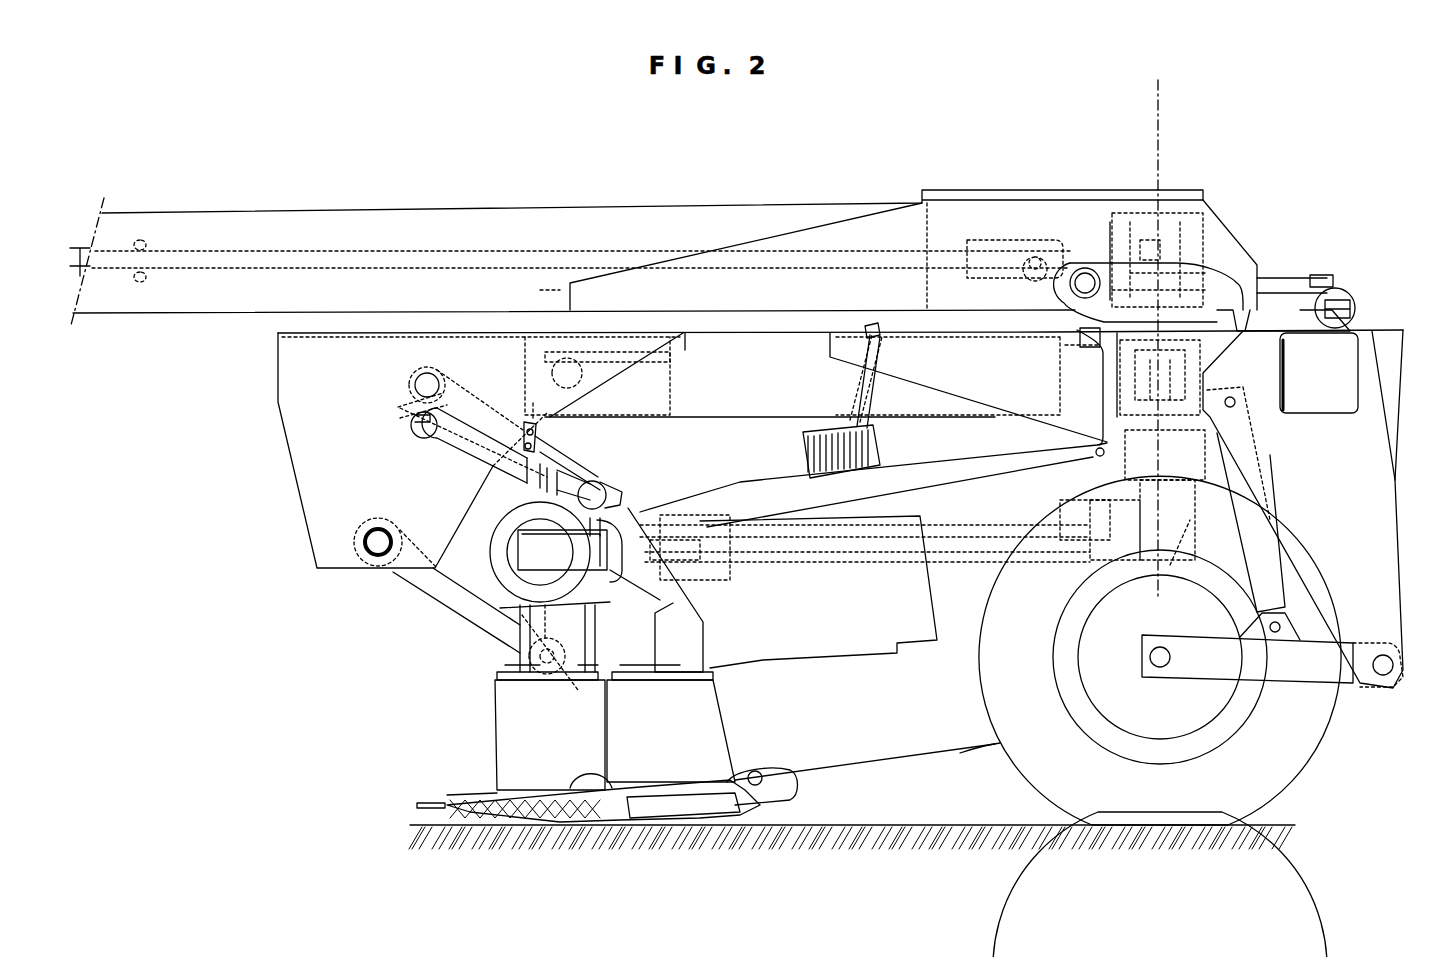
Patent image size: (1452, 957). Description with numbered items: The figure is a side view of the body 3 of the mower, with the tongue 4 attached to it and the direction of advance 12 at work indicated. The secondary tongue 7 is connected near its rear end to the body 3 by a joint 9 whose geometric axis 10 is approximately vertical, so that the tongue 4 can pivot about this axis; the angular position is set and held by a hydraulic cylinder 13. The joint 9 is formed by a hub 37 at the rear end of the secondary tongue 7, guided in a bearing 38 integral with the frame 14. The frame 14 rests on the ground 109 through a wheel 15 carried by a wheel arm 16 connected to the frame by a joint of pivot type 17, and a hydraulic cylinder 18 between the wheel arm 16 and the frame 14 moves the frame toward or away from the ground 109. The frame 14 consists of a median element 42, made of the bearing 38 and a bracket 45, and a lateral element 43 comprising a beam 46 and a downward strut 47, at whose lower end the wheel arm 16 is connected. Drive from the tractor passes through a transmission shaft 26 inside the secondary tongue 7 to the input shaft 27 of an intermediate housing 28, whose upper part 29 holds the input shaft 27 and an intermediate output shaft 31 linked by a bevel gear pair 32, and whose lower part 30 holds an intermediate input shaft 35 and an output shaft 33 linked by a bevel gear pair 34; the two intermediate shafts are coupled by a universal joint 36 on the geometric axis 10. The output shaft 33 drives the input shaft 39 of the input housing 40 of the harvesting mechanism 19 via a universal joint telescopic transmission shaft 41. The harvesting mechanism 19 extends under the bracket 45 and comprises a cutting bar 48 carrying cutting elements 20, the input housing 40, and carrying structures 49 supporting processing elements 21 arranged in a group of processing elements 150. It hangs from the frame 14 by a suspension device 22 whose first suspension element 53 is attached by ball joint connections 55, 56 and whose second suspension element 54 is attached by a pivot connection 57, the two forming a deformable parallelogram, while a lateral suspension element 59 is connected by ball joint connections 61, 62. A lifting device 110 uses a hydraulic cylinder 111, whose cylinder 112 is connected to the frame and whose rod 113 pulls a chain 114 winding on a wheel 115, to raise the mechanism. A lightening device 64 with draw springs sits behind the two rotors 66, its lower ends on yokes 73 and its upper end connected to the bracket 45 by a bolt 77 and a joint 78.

The body 3 is at (306, 650).
The tongue 4 is at (340, 207).
The secondary tongue 7 is at (514, 205).
The joint 9 is at (1224, 214).
The geometric axis 10 is at (1160, 127).
The direction of advance 12 is at (248, 103).
The hydraulic cylinder 13 is at (1341, 307).
The frame 14 is at (1388, 336).
The wheel 15 is at (1308, 754).
The wheel arm 16 is at (1283, 672).
The joint of pivot type 17 is at (1388, 670).
The hydraulic cylinder 18 is at (1258, 552).
The harvesting mechanism 19 is at (480, 688).
The cutting elements 20 is at (430, 807).
The processing elements 21 is at (879, 758).
The suspension device 22 is at (406, 580).
The transmission shaft 26 is at (582, 250).
The input shaft 27 is at (1085, 253).
The intermediate housing 28 is at (1213, 250).
The upper part 29 is at (1204, 195).
The lower part 30 is at (1172, 575).
The intermediate output shaft 31 is at (1100, 352).
The bevel gear pair 32 is at (1150, 235).
The output shaft 33 is at (1115, 575).
The bevel gear pair 34 is at (1180, 548).
The intermediate input shaft 35 is at (1200, 500).
The universal joint 36 is at (1212, 390).
The hub 37 is at (1230, 290).
The bearing 38 is at (1202, 449).
The input shaft 39 is at (640, 582).
The input housing 40 is at (490, 512).
The universal joint telescopic transmission shaft 41 is at (833, 562).
The median element 42 is at (773, 418).
The lateral element 43 is at (1355, 424).
The bracket 45 is at (295, 370).
The beam 46 is at (1355, 370).
The strut 47 is at (1370, 522).
The cutting bar 48 is at (553, 818).
The carrying structure 49 is at (592, 560).
The first suspension element 53 is at (440, 600).
The second suspension element 54 is at (565, 475).
The ball joint connection 55 is at (368, 522).
The ball joint connection 56 is at (525, 657).
The pivot connection 57 is at (438, 378).
The lateral suspension element 59 is at (508, 467).
The ball joint connection 61 is at (413, 385).
The ball joint connection 62 is at (612, 492).
The lightening device 64 is at (882, 460).
The rotor 66 is at (505, 733).
The yoke 73 is at (795, 782).
The bolt 77 is at (868, 378).
The joint 78 is at (882, 333).
The ground 109 is at (812, 830).
The lifting device 110 is at (709, 370).
The hydraulic cylinder 111 is at (753, 370).
The cylinder 112 is at (795, 352).
The rod 113 is at (645, 375).
The chain 114 is at (538, 432).
The wheel 115 is at (548, 375).
The group of processing elements 150 is at (880, 711).